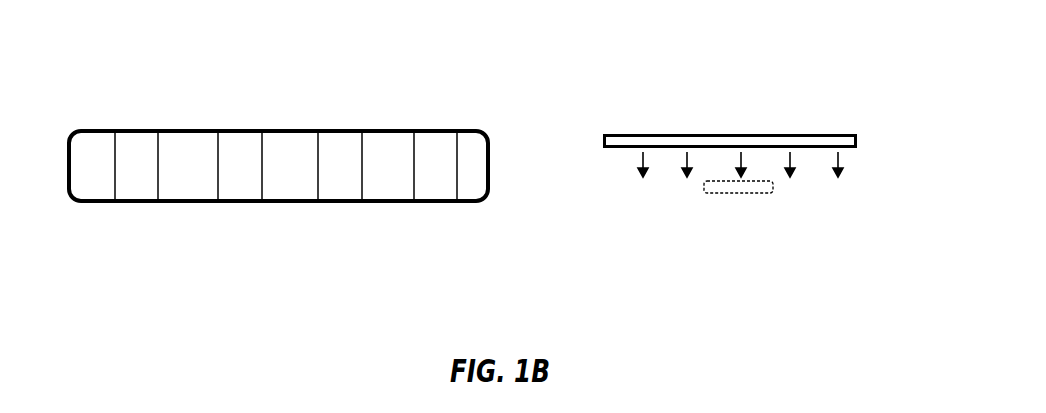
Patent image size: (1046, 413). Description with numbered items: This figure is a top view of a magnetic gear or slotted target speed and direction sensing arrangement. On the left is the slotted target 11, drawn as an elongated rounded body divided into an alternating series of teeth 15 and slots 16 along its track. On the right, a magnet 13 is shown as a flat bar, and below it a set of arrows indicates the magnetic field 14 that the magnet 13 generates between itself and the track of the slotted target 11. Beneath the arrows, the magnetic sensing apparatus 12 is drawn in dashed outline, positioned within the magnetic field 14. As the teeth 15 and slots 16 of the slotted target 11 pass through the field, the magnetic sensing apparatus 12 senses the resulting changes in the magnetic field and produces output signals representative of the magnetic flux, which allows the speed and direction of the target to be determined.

The slotted target 11 is at (285, 130).
The magnetic gear and/or slotted target speed and direction sensing apparatus 12 is at (743, 183).
The magnet 13 is at (717, 135).
The magnetic field 14 is at (843, 163).
The teeth 15 is at (436, 157).
The slots 16 is at (383, 173).